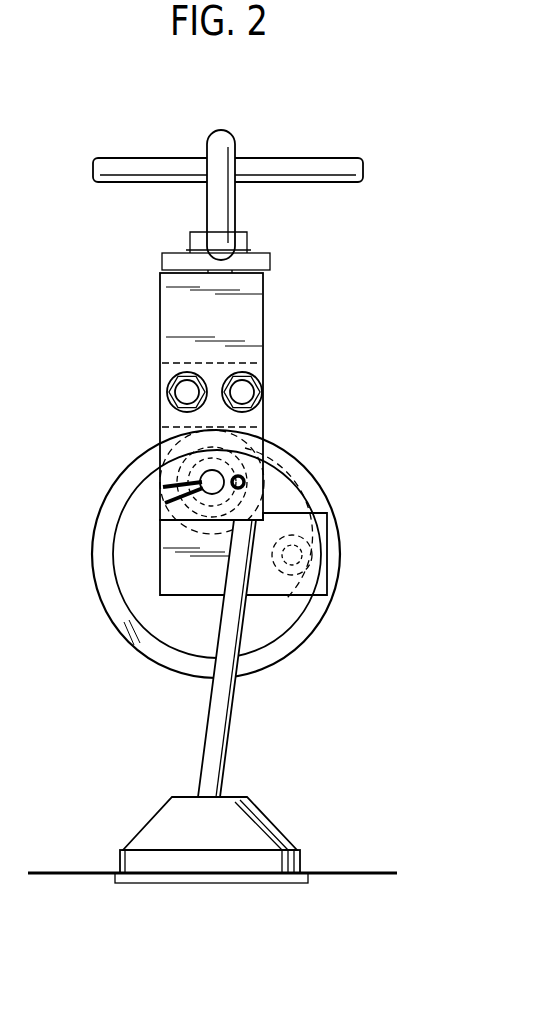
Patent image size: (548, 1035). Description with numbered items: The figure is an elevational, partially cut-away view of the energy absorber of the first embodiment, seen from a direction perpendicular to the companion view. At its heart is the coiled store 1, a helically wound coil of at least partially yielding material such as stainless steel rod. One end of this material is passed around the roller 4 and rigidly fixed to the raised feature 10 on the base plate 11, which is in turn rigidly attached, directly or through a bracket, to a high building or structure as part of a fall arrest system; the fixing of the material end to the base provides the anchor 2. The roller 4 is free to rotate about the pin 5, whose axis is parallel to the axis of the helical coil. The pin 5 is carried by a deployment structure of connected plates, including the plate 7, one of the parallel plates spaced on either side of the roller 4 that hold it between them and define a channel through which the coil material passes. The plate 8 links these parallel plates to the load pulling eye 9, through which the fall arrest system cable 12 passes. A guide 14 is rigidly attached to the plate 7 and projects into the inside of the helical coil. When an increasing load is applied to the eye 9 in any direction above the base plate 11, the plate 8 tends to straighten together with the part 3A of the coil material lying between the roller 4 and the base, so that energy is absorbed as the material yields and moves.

The coiled store 1 is at (98, 538).
The anchor 2 is at (195, 797).
The part of helical coil material 3A is at (220, 735).
The roller 4 is at (225, 467).
The pin 5 is at (212, 480).
The plate 7 is at (177, 573).
The plate 8 is at (175, 313).
The load pulling eye 9 is at (221, 140).
The raised feature 10 is at (272, 845).
The base plate 11 is at (52, 873).
The fall arrest system cable 12 is at (148, 165).
The guide 14 is at (305, 557).